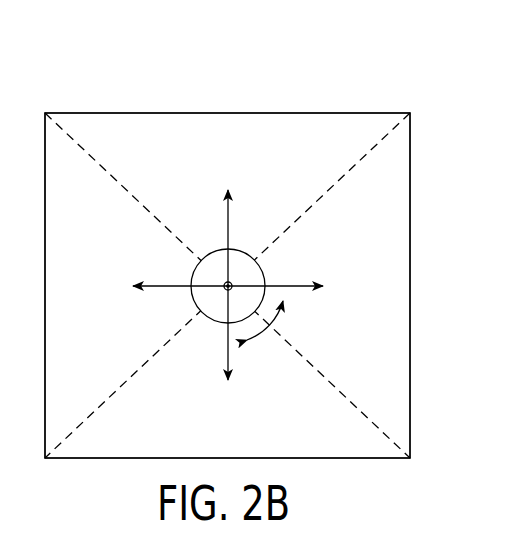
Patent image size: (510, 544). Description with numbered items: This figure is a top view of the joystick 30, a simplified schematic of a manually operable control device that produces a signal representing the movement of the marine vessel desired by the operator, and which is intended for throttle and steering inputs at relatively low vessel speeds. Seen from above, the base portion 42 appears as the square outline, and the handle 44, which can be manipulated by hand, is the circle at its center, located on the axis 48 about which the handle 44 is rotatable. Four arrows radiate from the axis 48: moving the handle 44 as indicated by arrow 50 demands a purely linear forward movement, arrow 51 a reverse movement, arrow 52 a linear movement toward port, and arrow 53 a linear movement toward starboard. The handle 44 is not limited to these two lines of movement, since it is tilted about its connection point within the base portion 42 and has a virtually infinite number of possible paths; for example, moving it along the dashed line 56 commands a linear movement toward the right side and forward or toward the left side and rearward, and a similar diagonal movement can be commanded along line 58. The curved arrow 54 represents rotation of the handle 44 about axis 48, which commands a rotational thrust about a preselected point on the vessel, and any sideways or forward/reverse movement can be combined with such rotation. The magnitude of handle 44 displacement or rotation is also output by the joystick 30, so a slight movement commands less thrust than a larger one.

The joystick 30 is at (350, 84).
The base portion 42 is at (398, 262).
The handle 44 is at (264, 272).
The axis 48 is at (228, 286).
The arrow 50 is at (230, 221).
The arrow 51 is at (227, 352).
The arrow 52 is at (160, 283).
The arrow 53 is at (297, 285).
The arrow 54 is at (275, 322).
The dashed line 56 is at (325, 192).
The line 58 is at (107, 168).